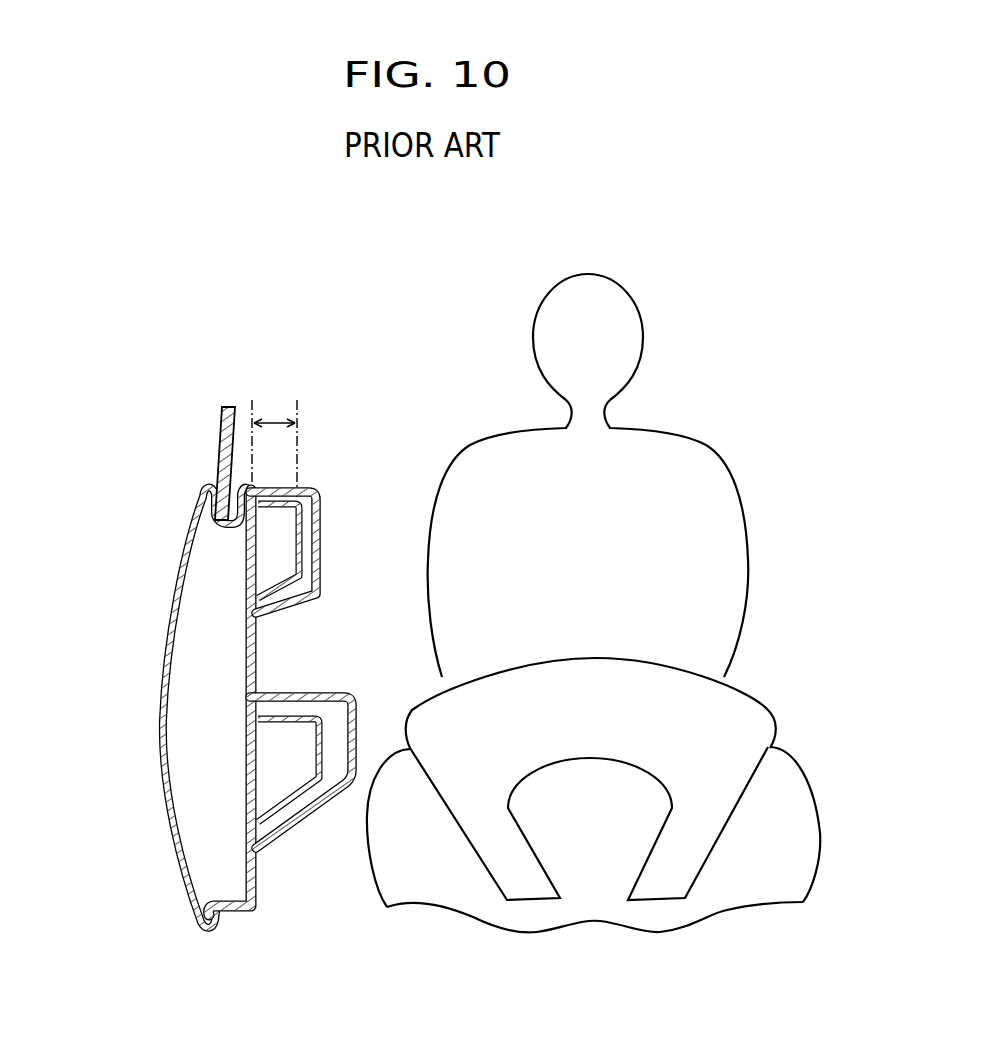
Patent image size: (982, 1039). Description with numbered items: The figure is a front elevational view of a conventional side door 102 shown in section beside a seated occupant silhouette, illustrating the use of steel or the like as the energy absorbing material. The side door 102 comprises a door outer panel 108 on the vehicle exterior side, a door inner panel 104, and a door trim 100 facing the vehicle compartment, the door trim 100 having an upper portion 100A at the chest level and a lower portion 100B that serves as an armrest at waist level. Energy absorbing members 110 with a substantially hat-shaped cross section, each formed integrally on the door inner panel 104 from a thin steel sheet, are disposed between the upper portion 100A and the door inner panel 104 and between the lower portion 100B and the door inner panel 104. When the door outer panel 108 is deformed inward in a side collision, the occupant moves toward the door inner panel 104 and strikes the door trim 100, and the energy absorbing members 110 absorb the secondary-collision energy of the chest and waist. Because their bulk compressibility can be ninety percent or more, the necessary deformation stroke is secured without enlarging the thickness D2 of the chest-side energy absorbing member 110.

The door trim 100 is at (320, 487).
The upper portion of the door trim 100A is at (320, 537).
The lower portion (armrest) of the door trim 100B is at (320, 695).
The side door 102 is at (172, 500).
The door inner panel 104 is at (250, 756).
The door outer panel 108 is at (160, 735).
The energy absorbing member 110 is at (300, 560).
The thickness (depth) of the energy absorbing member D2 is at (271, 418).